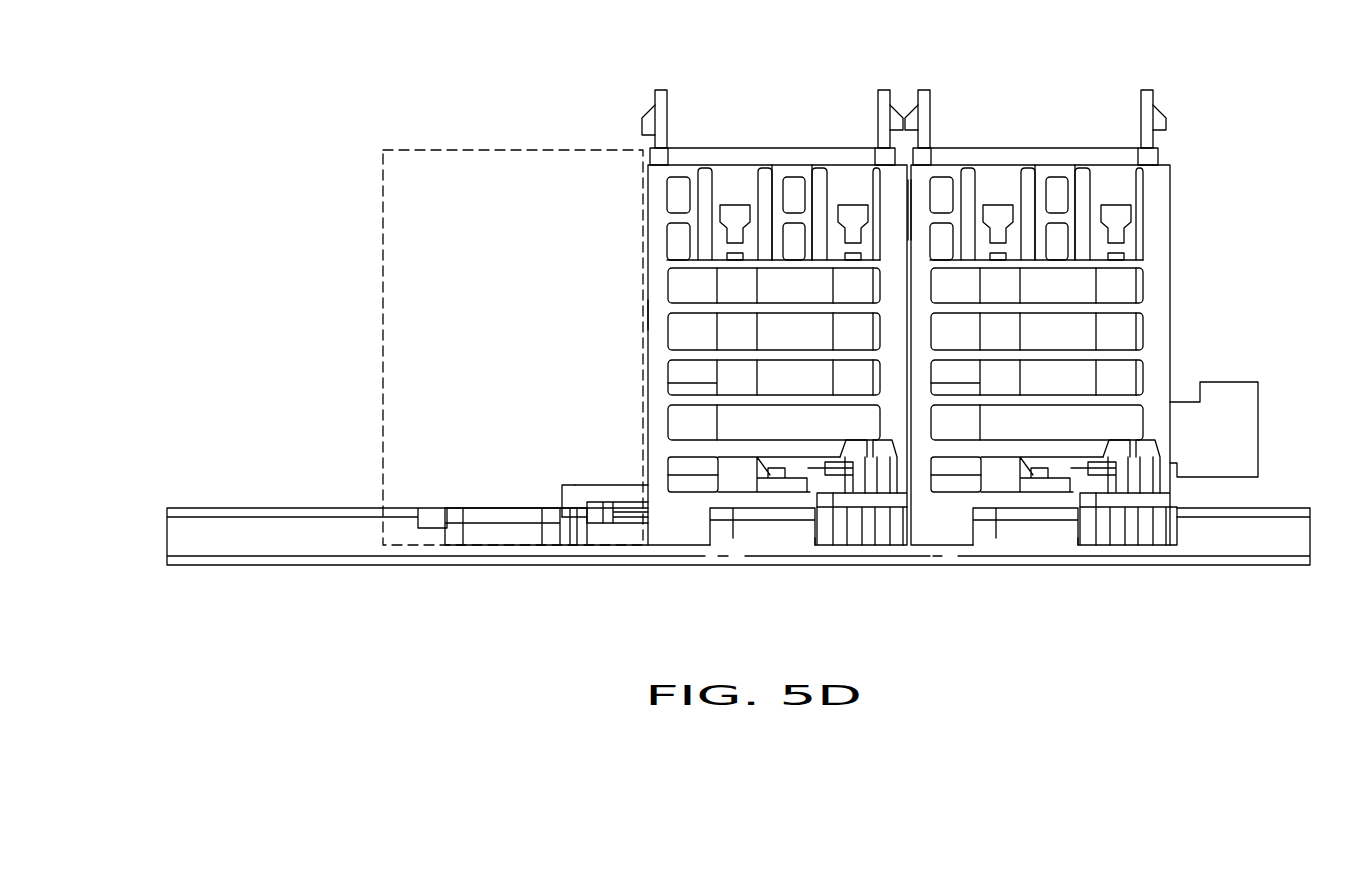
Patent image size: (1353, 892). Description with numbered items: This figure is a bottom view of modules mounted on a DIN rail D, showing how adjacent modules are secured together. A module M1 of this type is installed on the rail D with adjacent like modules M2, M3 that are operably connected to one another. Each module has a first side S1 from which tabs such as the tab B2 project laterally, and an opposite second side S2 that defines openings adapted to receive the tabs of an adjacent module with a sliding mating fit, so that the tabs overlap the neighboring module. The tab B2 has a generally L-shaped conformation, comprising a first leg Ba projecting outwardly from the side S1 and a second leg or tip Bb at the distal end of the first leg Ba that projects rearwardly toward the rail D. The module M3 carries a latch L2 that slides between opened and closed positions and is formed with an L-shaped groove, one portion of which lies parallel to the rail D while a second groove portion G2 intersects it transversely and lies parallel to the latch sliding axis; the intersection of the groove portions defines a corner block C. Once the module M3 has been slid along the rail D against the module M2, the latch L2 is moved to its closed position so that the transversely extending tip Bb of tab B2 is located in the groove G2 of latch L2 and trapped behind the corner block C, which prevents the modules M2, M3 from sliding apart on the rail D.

The rail D is at (258, 543).
The module M3 is at (500, 180).
The module M2 is at (726, 176).
The module M1 is at (1150, 352).
The first side S1 is at (908, 222).
The second side S2 is at (906, 196).
The latch L2 is at (500, 537).
The second groove portion G2 is at (573, 540).
The corner block C is at (600, 525).
The first leg Ba is at (598, 485).
The second leg or tip Bb is at (568, 485).
The tab B2 is at (626, 484).